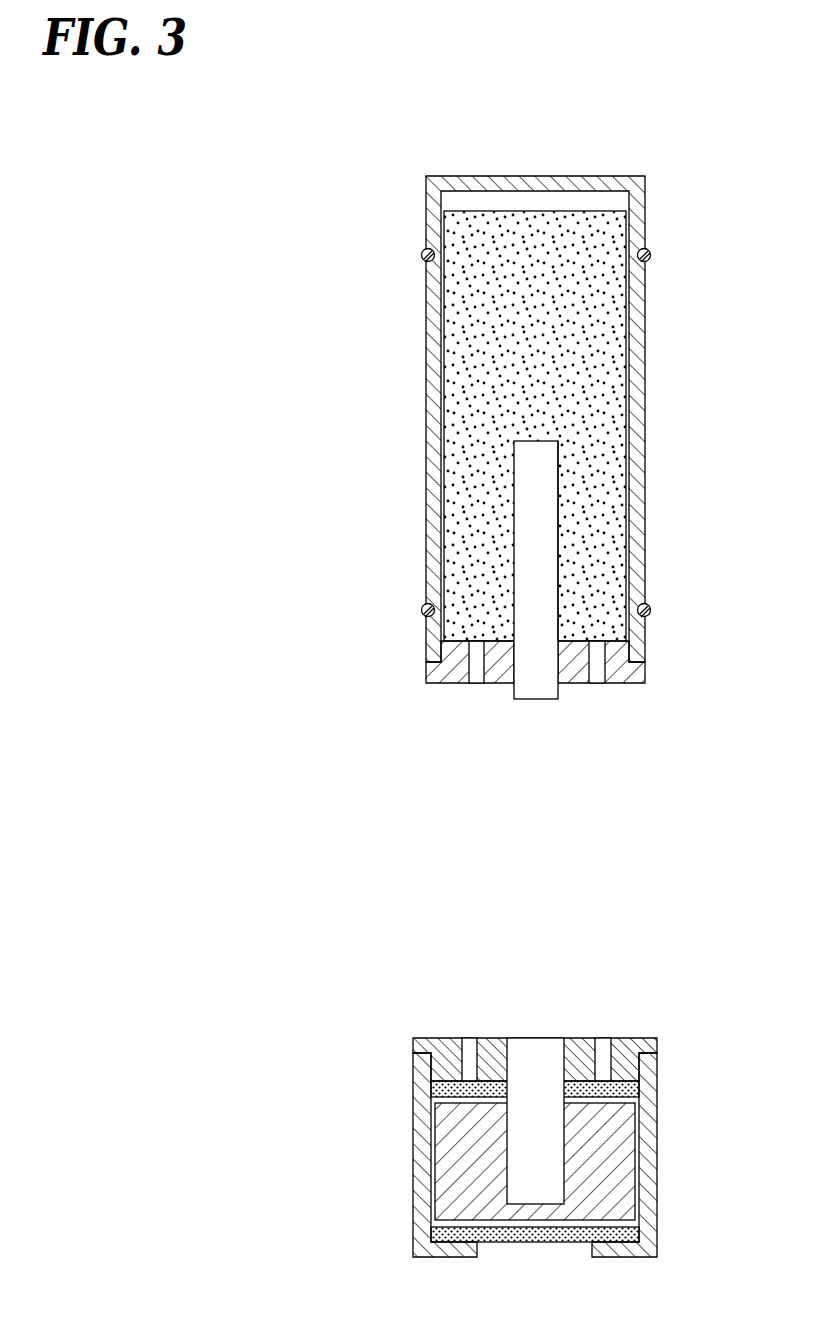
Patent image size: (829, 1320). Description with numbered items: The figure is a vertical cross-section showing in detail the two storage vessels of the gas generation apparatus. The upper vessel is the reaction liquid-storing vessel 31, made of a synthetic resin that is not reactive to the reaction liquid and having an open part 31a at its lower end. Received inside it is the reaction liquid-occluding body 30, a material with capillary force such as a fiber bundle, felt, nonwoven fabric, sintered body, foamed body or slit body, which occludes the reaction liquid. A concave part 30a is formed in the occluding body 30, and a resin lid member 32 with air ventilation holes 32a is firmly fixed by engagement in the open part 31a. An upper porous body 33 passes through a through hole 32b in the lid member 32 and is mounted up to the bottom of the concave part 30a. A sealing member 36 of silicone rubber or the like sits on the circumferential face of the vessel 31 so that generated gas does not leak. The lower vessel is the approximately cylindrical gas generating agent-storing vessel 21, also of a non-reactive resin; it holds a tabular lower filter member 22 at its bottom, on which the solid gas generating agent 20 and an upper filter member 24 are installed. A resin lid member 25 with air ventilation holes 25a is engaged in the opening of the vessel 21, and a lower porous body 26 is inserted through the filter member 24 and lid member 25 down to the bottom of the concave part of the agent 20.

The solid gas generating agent 20 is at (467, 1168).
The gas generating agent-storing vessel 21 is at (430, 1216).
The lower filter member 22 is at (628, 1235).
The upper filter member 24 is at (627, 1088).
The lid member 25 is at (413, 1043).
The air ventilation holes 25a is at (463, 1037).
The lower porous body 26 is at (523, 1121).
The reaction liquid-occluding body 30 is at (462, 435).
The concave part 30a is at (560, 492).
The reaction liquid-storing vessel 31 is at (430, 355).
The open part 31a is at (650, 251).
The lid member 32 is at (428, 670).
The air ventilation holes 32a is at (472, 673).
The through hole 32b is at (562, 683).
The upper porous body 33 is at (513, 533).
The sealing member 36 is at (423, 252).